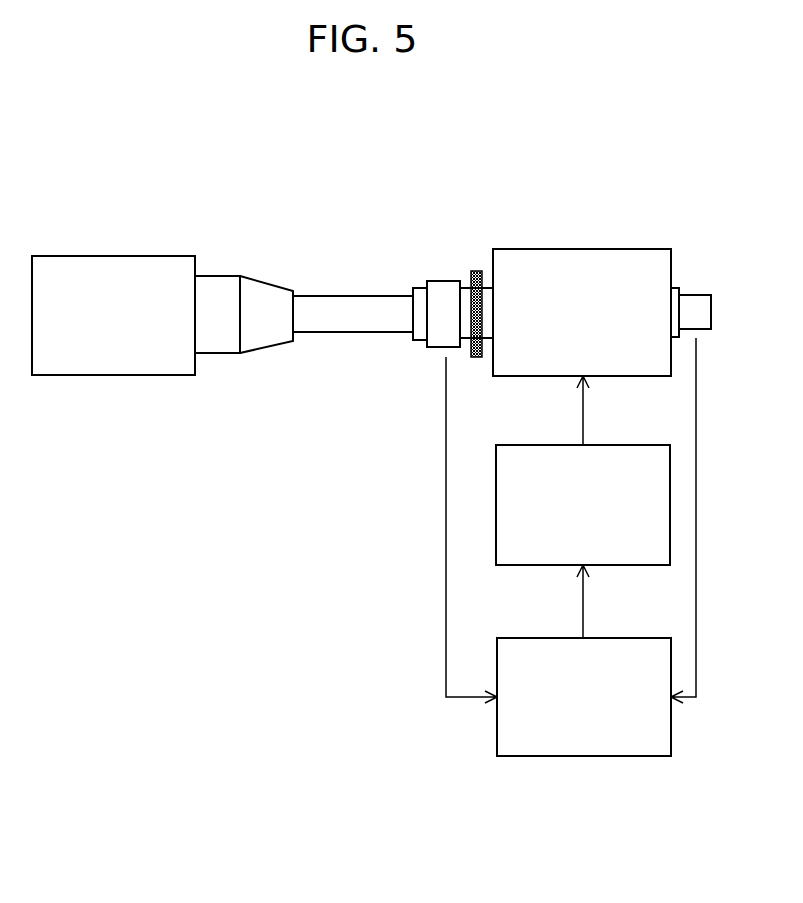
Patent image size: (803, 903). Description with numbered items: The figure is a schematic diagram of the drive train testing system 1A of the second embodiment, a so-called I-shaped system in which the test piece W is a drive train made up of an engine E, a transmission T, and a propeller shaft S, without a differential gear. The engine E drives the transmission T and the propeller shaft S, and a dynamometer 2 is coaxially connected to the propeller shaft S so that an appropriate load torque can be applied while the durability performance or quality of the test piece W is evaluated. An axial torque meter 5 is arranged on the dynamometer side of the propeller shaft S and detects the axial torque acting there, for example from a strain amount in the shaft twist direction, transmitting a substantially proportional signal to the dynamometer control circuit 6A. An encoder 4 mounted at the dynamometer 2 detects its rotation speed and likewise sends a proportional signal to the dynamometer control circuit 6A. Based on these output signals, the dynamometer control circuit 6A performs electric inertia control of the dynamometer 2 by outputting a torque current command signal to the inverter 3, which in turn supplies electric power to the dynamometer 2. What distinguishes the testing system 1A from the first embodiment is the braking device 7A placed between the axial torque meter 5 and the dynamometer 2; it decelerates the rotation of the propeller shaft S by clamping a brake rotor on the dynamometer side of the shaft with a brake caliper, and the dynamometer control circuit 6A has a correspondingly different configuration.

The testing system 1A is at (45, 116).
The test piece W is at (290, 202).
The engine E is at (128, 256).
The transmission T is at (266, 282).
The propeller shaft S is at (330, 296).
The axial torque meter 5 is at (455, 354).
The braking device 7A is at (478, 270).
The dynamometer 2 is at (617, 249).
The encoder 4 is at (686, 341).
The inverter 3 is at (626, 446).
The dynamometer control circuit 6A is at (627, 639).